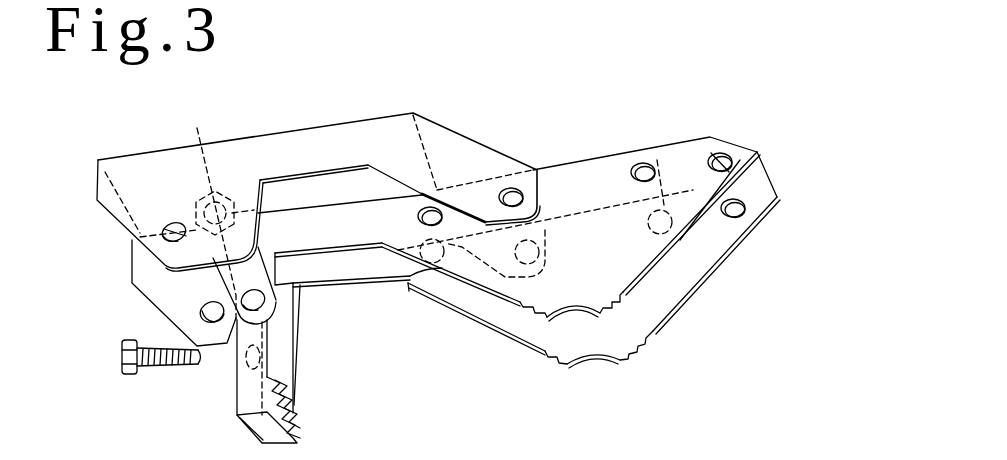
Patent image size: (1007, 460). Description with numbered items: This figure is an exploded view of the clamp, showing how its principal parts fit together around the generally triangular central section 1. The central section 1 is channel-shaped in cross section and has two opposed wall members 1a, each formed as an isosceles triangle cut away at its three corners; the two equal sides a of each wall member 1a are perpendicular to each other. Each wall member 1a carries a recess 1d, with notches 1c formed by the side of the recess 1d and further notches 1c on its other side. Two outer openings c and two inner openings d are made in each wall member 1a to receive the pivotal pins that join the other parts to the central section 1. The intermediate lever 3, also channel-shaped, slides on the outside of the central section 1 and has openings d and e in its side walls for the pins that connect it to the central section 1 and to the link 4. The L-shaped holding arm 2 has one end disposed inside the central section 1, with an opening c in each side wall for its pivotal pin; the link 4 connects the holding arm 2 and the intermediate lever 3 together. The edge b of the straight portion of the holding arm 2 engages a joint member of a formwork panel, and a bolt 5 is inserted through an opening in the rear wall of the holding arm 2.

The central section 1 is at (583, 278).
The wall member 1a is at (697, 200).
The notch 1c is at (543, 357).
The recess 1d is at (600, 365).
The holding arm 2 is at (228, 393).
The intermediate lever 3 is at (282, 126).
The link 4 is at (208, 117).
The bolt 5 is at (122, 356).
The equal side a is at (467, 280).
The edge b is at (275, 357).
The outer opening c is at (418, 216).
The inner opening d is at (516, 182).
The opening e is at (168, 222).